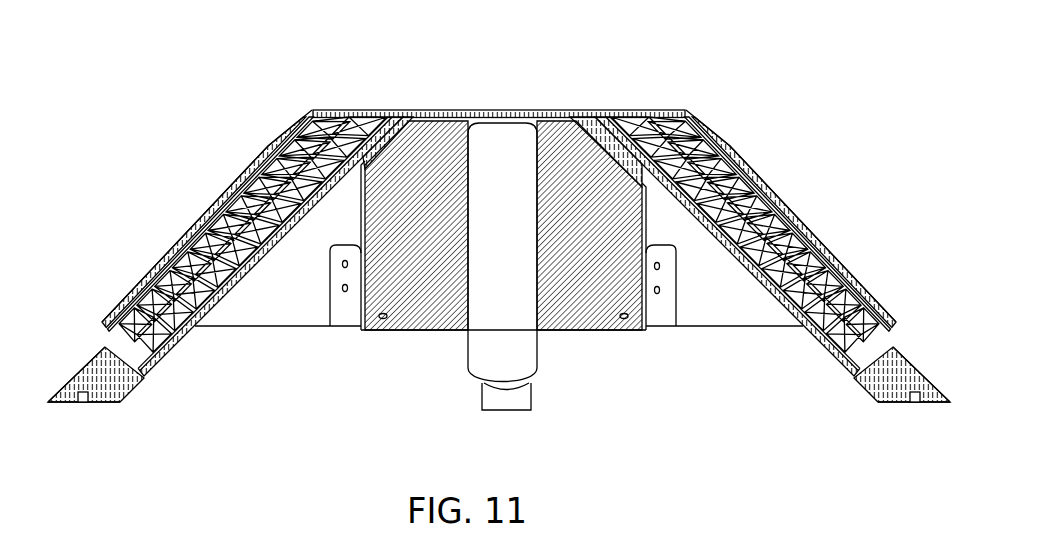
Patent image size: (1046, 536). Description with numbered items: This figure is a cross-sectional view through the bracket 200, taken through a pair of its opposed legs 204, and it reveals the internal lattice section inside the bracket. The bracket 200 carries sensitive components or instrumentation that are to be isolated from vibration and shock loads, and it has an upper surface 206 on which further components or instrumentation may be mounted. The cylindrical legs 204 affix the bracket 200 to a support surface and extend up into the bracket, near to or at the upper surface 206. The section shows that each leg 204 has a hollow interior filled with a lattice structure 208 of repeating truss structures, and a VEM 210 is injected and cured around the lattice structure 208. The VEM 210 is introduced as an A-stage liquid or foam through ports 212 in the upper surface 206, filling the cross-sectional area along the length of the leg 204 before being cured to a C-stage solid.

The bracket 200 is at (751, 73).
The legs 204 is at (250, 178).
The upper surface 206 is at (442, 110).
The lattice structure 208 is at (186, 240).
The VEM 210 is at (128, 295).
The ports 212 is at (367, 110).